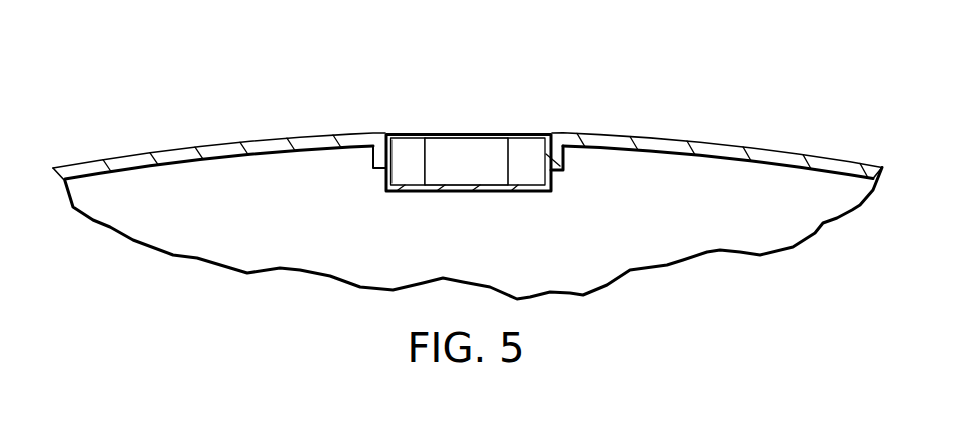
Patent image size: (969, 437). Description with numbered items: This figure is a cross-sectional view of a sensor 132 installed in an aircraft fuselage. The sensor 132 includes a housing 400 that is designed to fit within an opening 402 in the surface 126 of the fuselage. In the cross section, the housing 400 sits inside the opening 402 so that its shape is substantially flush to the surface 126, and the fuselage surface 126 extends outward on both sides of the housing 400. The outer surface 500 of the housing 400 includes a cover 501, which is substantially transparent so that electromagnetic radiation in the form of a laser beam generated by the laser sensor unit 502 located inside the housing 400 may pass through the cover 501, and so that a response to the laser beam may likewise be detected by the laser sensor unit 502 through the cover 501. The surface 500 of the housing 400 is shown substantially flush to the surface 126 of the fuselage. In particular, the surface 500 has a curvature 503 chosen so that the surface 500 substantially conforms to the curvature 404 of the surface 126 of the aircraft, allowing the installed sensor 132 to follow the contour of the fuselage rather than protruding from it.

The surface 126 is at (780, 149).
The curvature 404 is at (265, 137).
The housing 400 is at (502, 193).
The surface 500 is at (400, 132).
The cover 501 is at (458, 132).
The laser sensor unit 502 is at (463, 178).
The curvature 503 is at (521, 132).
The opening 402 is at (387, 152).
The sensor 132 is at (478, 133).